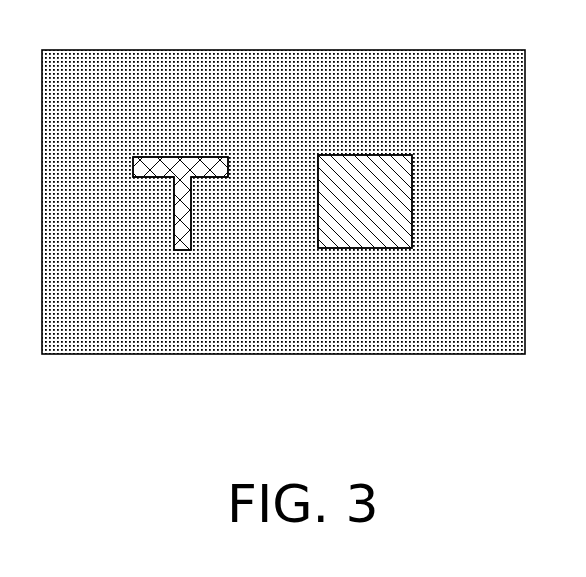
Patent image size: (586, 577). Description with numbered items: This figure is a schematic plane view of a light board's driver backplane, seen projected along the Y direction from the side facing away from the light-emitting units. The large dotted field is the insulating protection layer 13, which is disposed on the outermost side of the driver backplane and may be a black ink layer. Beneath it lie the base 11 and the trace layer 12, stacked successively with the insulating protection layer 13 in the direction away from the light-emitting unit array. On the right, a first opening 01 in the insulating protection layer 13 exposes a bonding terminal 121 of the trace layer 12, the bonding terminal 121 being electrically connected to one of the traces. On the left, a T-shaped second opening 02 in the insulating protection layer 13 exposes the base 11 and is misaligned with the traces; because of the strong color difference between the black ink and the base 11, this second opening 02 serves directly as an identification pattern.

The insulating protection layer 13 is at (102, 130).
The base 11 is at (181, 157).
The trace layer 12 is at (406, 130).
The bonding terminal 121 is at (354, 172).
The first opening 01 is at (322, 232).
The second opening 02 is at (180, 250).